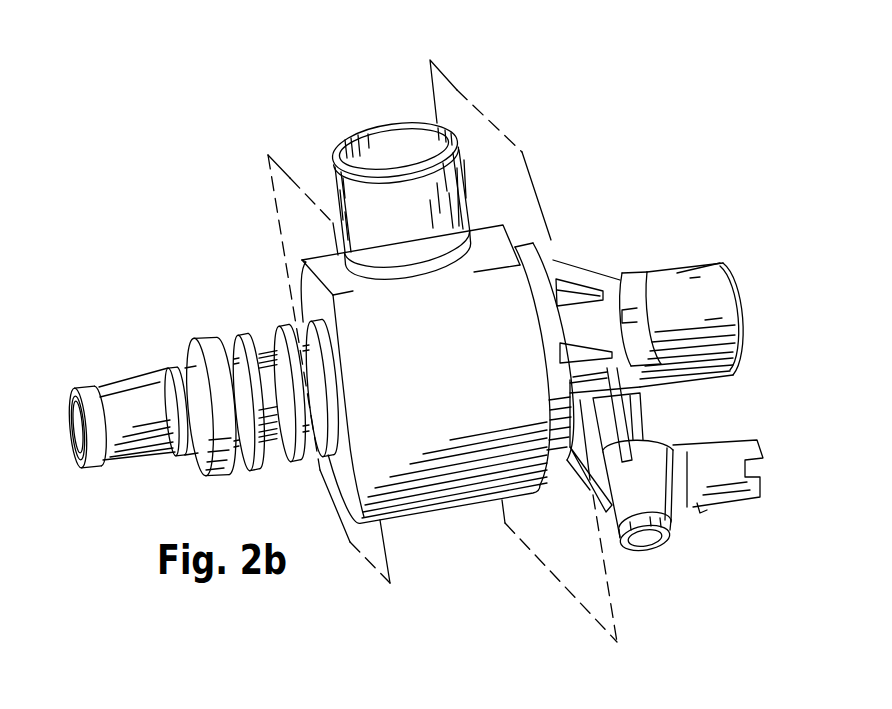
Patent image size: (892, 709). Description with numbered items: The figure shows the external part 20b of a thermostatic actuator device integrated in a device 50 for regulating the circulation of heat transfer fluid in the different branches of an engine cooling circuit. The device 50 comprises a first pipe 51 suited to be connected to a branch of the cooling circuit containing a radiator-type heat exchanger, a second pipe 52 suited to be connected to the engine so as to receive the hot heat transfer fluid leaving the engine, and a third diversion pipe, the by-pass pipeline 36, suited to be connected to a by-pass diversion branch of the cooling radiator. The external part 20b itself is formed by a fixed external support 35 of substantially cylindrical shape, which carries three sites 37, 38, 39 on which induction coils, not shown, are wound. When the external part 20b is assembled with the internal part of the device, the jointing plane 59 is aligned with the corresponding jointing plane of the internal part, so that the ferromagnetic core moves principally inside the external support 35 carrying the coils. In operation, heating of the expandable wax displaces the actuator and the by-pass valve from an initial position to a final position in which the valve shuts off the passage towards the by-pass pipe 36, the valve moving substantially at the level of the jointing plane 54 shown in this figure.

The external part 20b is at (231, 262).
The fixed external support 35 is at (233, 387).
The by-pass pipeline 36 is at (144, 410).
The site 37 is at (252, 413).
The site 38 is at (281, 403).
The site 39 is at (296, 342).
The device for regulation of the circulation of heat transfer fluid 50 is at (620, 236).
The first pipe 51 is at (679, 292).
The second pipe 52 is at (392, 150).
The jointing plane 54 is at (358, 556).
The jointing plane 59 is at (512, 173).